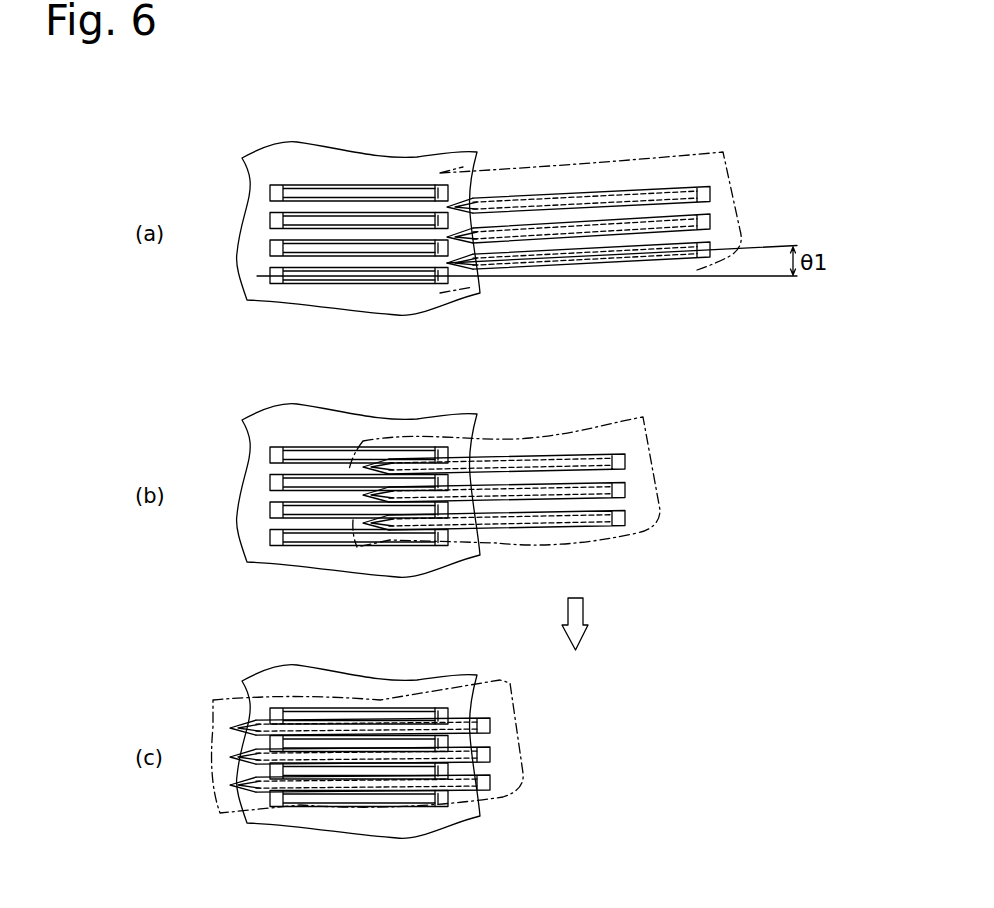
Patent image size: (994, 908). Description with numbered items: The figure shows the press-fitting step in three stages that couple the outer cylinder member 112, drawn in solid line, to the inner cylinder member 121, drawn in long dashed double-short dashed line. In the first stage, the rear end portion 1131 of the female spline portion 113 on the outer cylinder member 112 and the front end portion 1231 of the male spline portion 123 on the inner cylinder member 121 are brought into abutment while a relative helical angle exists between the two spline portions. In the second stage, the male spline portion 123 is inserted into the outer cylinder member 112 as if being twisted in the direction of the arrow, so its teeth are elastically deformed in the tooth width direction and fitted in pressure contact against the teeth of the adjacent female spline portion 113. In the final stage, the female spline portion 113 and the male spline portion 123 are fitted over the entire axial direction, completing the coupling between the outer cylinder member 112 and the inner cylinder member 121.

The outer cylinder member 112 is at (343, 160).
The female spline portion 113 is at (297, 188).
The rear end portion of the female spline portion 1131 is at (438, 184).
The inner cylinder member 121 is at (648, 173).
The male spline portion 123 is at (582, 194).
The front end portion of the male spline portion 1231 is at (449, 206).